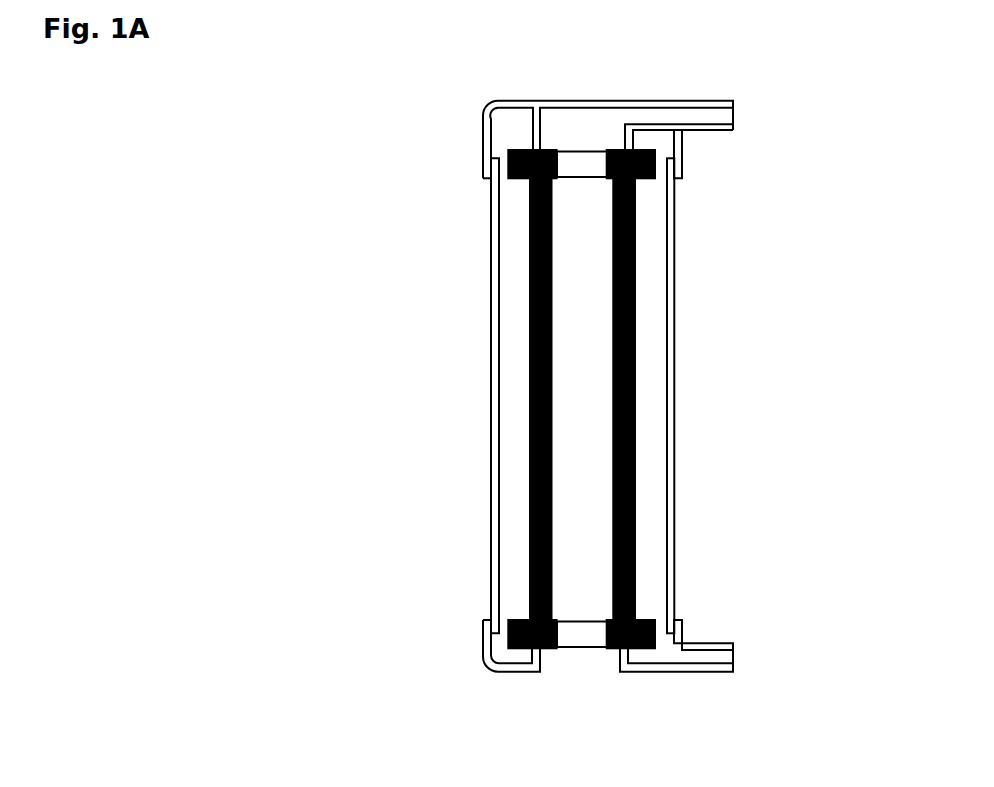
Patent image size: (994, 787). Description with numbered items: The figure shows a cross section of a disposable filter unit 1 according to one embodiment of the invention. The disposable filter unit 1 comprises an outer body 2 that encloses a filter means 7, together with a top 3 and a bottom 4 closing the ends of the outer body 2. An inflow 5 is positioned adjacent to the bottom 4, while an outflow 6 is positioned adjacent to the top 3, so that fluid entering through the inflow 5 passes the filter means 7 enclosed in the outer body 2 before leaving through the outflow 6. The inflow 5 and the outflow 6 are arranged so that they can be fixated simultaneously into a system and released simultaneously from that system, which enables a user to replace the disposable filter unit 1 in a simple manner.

The disposable filter unit 1 is at (413, 102).
The outer body 2 is at (671, 255).
The top 3 is at (633, 101).
The bottom 4 is at (622, 673).
The inflow 5 is at (733, 657).
The outflow 6 is at (733, 116).
The filter means 7 is at (635, 297).